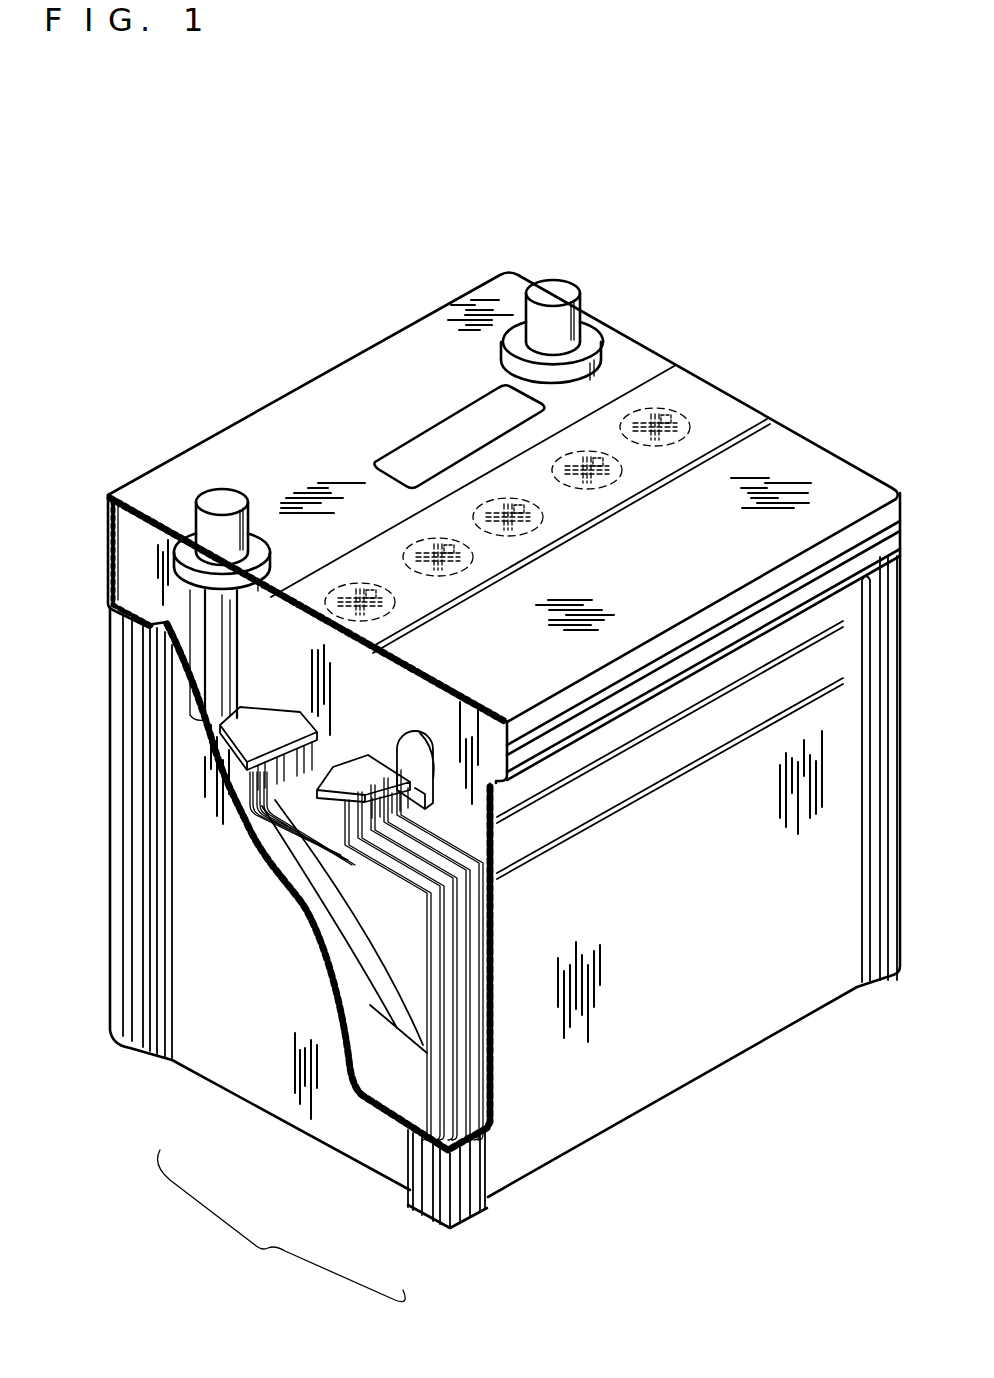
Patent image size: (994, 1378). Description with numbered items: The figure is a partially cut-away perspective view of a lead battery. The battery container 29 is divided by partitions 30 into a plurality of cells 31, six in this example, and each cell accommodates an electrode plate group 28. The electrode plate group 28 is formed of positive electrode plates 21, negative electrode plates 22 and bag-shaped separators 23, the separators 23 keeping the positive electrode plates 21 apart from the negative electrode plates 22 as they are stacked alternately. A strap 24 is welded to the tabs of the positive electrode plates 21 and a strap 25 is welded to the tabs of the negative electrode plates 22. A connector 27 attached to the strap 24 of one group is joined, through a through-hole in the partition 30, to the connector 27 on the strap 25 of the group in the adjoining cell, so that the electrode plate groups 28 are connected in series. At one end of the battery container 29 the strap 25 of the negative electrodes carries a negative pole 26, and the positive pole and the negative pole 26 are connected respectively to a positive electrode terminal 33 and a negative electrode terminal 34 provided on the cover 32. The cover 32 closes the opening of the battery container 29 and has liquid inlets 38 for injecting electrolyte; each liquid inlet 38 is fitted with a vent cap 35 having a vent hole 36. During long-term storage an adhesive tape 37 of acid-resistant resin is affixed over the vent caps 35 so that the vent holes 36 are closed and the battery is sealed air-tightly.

The positive electrode plate 21 is at (393, 952).
The negative electrode plate 22 is at (370, 1005).
The separator 23 is at (417, 1103).
The strap 24 is at (333, 790).
The strap 25 is at (250, 747).
The negative pole 26 is at (217, 663).
The connector 27 is at (420, 760).
The electrode plate group 28 is at (282, 1226).
The battery container 29 is at (193, 1046).
The partition 30 is at (403, 697).
The cell 31 is at (150, 577).
The cover 32 is at (780, 447).
The positive electrode terminal 33 is at (553, 292).
The negative electrode terminal 34 is at (225, 500).
The vent cap 35 is at (693, 437).
The vent hole 36 is at (683, 413).
The adhesive tape 37 is at (645, 393).
The liquid inlet 38 is at (600, 483).